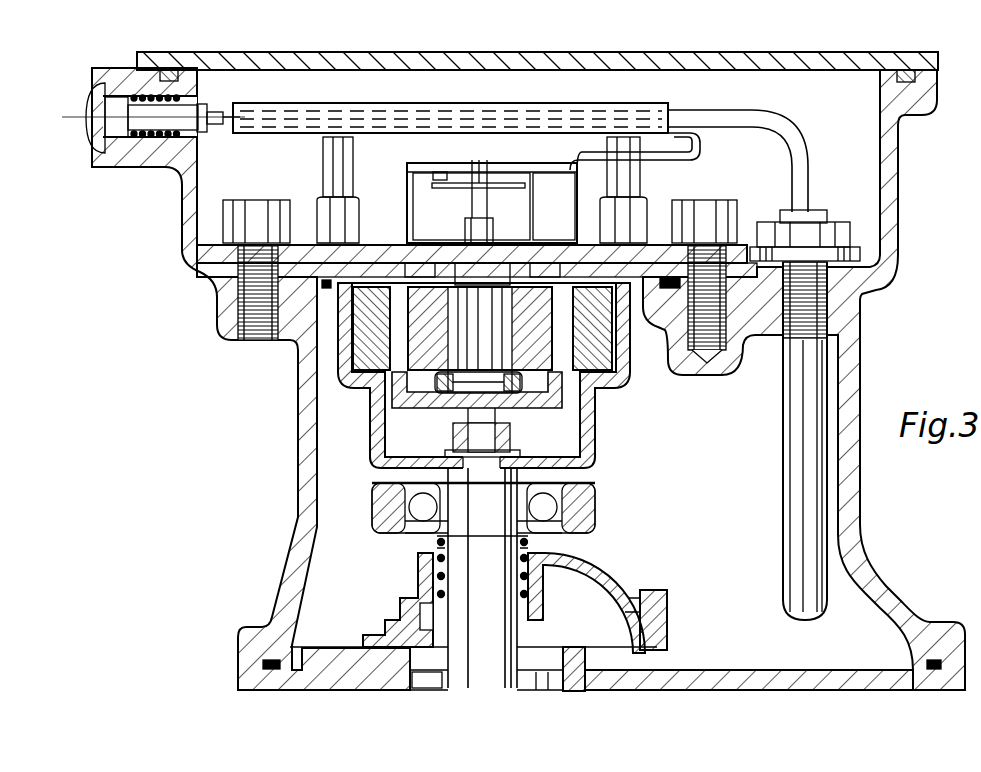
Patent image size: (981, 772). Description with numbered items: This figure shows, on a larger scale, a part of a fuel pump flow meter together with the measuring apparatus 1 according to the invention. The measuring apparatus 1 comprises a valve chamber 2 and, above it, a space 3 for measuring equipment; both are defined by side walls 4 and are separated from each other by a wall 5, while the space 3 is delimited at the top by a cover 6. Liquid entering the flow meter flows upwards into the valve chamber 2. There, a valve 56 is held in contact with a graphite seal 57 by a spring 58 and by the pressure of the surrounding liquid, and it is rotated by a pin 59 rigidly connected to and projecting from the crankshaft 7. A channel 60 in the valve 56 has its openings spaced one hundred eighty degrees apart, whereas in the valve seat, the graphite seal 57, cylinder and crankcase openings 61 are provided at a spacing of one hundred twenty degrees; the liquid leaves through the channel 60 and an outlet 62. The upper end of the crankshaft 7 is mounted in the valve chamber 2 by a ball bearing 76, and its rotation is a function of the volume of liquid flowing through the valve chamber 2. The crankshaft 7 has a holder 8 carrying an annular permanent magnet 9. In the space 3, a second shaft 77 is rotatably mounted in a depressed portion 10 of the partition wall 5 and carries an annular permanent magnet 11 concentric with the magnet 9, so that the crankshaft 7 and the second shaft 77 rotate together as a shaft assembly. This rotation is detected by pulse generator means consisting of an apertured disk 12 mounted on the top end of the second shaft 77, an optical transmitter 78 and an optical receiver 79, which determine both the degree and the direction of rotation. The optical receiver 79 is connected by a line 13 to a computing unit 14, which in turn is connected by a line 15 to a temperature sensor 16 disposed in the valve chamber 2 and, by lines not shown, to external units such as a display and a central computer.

The measuring apparatus 1 is at (894, 369).
The valve chamber 2 is at (699, 491).
The space for measuring equipment 3 is at (838, 118).
The side walls 4 is at (892, 222).
The wall 5 is at (400, 248).
The cover 6 is at (750, 62).
The crankshaft 7 is at (468, 698).
The holder 8 is at (594, 425).
The annular permanent magnet 9 is at (358, 387).
The depressed portion 10 is at (543, 394).
The annular permanent magnet 11 is at (541, 250).
The apertured disk 12 is at (458, 190).
The line 13 is at (694, 153).
The computing unit 14 is at (512, 100).
The line 15 is at (810, 161).
The temperature sensor 16 is at (783, 521).
The valve 56 is at (626, 573).
The graphite seal 57 is at (350, 650).
The spring 58 is at (540, 546).
The pin 59 is at (405, 692).
The channel 60 is at (664, 613).
The cylinder and crankcase openings 61 is at (626, 694).
The outlet 62 is at (430, 694).
The ball bearing 76 is at (596, 488).
The second shaft 77 is at (442, 395).
The optical transmitter 78 is at (410, 226).
The optical receiver 79 is at (437, 171).